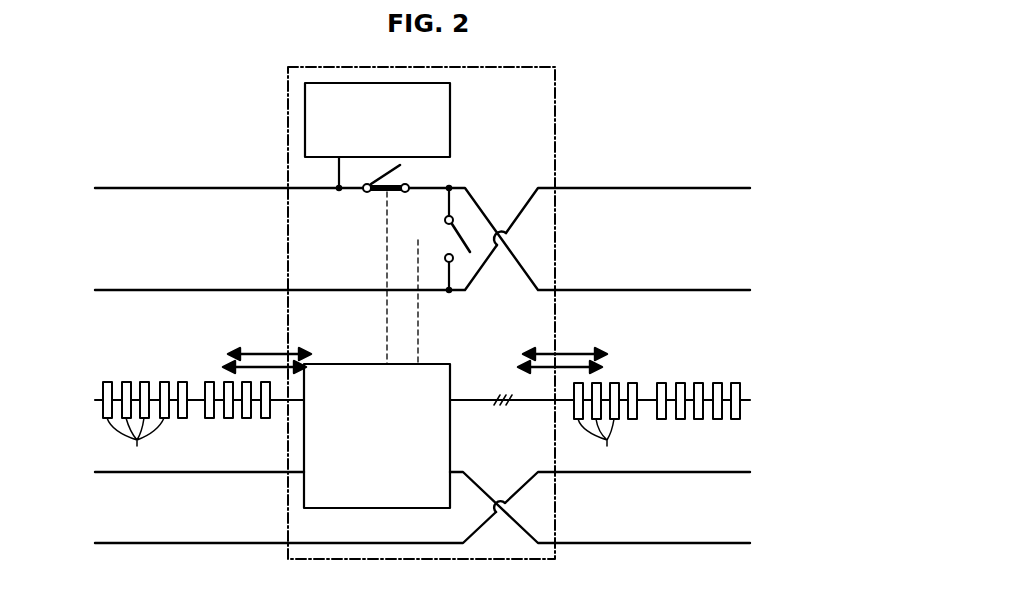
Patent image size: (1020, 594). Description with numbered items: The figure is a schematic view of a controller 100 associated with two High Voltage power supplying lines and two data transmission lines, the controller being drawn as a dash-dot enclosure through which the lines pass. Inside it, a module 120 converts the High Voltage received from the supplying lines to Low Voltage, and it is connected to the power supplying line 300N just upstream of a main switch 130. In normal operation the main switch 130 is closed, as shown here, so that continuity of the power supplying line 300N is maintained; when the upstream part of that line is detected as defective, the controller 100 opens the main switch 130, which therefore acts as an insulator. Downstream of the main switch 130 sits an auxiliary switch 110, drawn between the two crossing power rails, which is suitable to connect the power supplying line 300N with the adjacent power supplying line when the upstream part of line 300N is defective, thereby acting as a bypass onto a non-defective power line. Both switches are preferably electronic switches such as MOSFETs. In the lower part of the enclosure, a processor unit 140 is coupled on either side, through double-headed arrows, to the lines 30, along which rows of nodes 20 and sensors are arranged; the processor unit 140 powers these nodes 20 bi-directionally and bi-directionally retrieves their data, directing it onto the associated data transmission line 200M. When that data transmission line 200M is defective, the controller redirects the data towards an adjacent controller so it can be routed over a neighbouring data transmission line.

The controller 100 is at (556, 103).
The auxiliary switch 110 is at (476, 222).
The module 120 is at (393, 129).
The main switch 130 is at (374, 200).
The processor unit 140 is at (393, 442).
The power supplying line 300N is at (692, 268).
The data transmission line 200M is at (668, 523).
The lines 30 is at (96, 398).
The nodes 20 is at (363, 442).